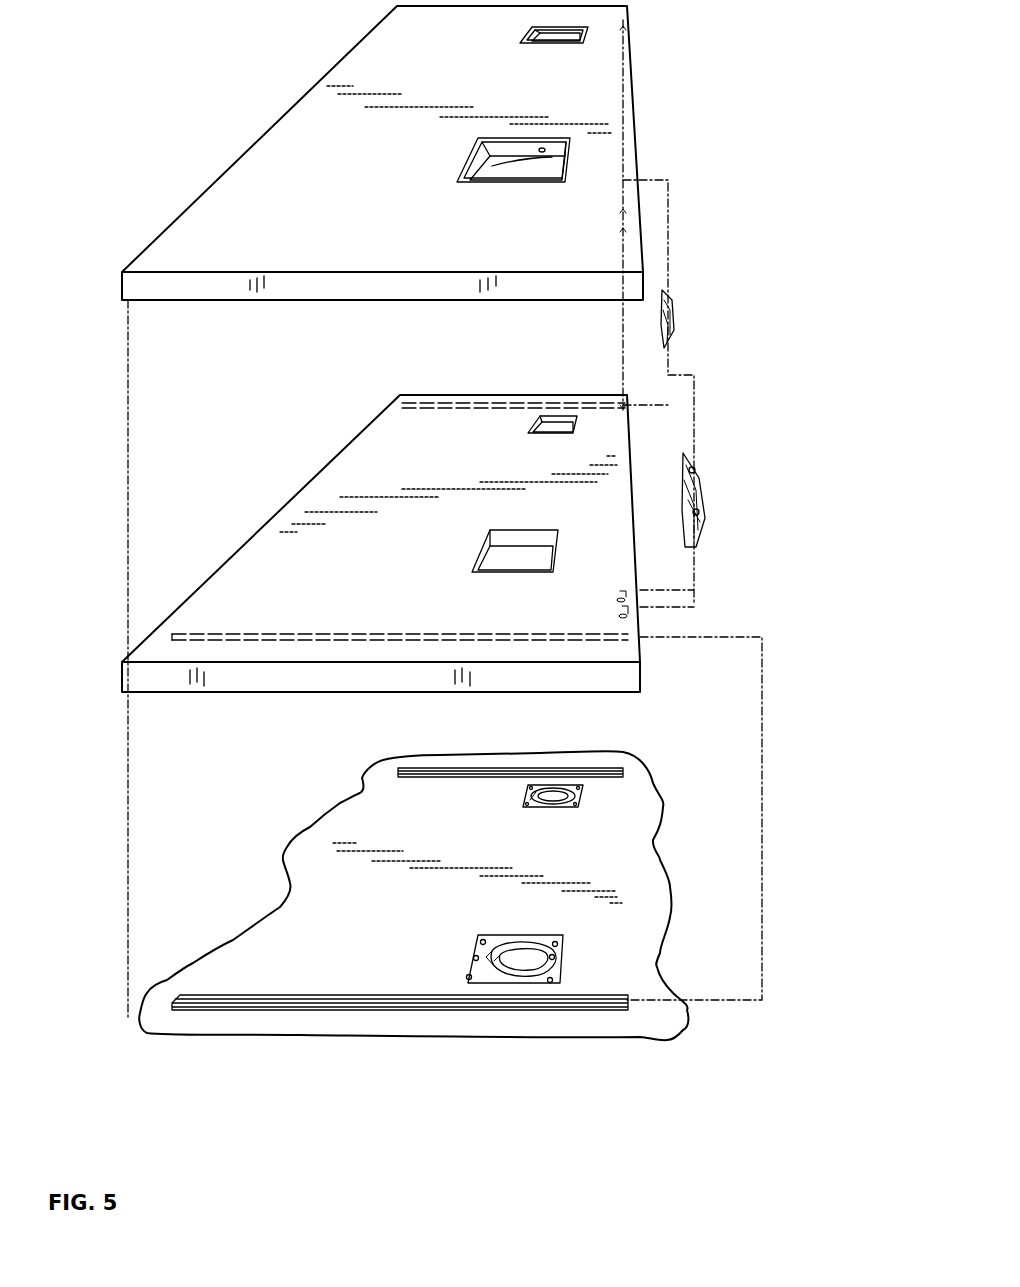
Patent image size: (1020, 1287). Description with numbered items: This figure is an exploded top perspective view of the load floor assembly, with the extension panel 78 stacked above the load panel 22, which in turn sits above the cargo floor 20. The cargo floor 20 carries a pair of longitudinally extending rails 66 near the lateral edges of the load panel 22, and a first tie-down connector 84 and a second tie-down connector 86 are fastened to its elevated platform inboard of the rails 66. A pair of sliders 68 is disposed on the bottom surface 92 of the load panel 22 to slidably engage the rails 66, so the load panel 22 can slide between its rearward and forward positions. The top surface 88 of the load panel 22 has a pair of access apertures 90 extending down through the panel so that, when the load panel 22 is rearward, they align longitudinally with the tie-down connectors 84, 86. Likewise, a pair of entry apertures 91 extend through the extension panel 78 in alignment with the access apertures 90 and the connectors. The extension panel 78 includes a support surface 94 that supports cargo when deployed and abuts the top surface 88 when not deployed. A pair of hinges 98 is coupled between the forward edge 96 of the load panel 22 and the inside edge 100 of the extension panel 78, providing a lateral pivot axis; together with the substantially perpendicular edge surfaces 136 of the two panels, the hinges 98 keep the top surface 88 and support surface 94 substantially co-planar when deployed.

The cargo floor 20 is at (368, 952).
The load panel 22 is at (388, 567).
The rails 66 is at (362, 778).
The sliders 68 is at (398, 398).
The extension panel 78 is at (388, 192).
The first tie-down connector 84 is at (560, 972).
The second tie-down connector 86 is at (585, 795).
The top surface 88 is at (305, 515).
The access apertures 90 is at (577, 424).
The entry apertures 91 is at (588, 33).
The bottom surface 92 is at (178, 692).
The support surface 94 is at (178, 300).
The forward edge 96 is at (637, 455).
The hinges 98 is at (673, 312).
The inside edge 100 is at (628, 198).
The edge surfaces 136 is at (641, 283).